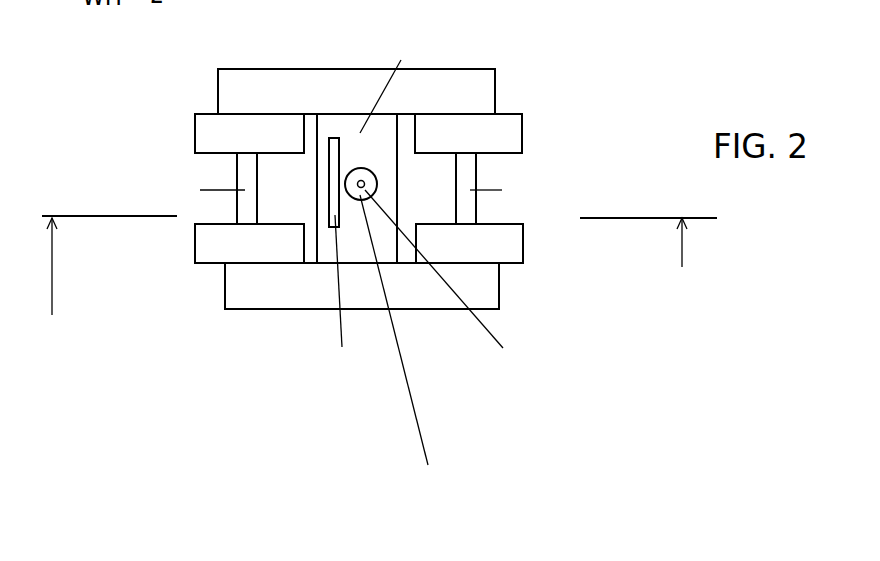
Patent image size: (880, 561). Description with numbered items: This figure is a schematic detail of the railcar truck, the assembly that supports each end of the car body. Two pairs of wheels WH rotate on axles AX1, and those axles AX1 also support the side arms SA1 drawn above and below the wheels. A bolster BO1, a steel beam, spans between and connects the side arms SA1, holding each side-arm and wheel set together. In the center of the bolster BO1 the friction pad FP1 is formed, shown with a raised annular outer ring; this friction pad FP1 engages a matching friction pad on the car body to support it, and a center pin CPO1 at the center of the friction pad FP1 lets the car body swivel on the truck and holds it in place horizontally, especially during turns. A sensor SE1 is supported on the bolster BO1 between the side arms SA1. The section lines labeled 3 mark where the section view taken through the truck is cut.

The side arm SA1 is at (270, 90).
The bolster BO1 is at (383, 138).
The wheel WH is at (196, 142).
The axle AX1 is at (578, 192).
The sensor SE1 is at (361, 285).
The center pin CPO1 is at (543, 385).
The friction pad FP1 is at (423, 366).
The section line 3- 3 is at (379, 279).